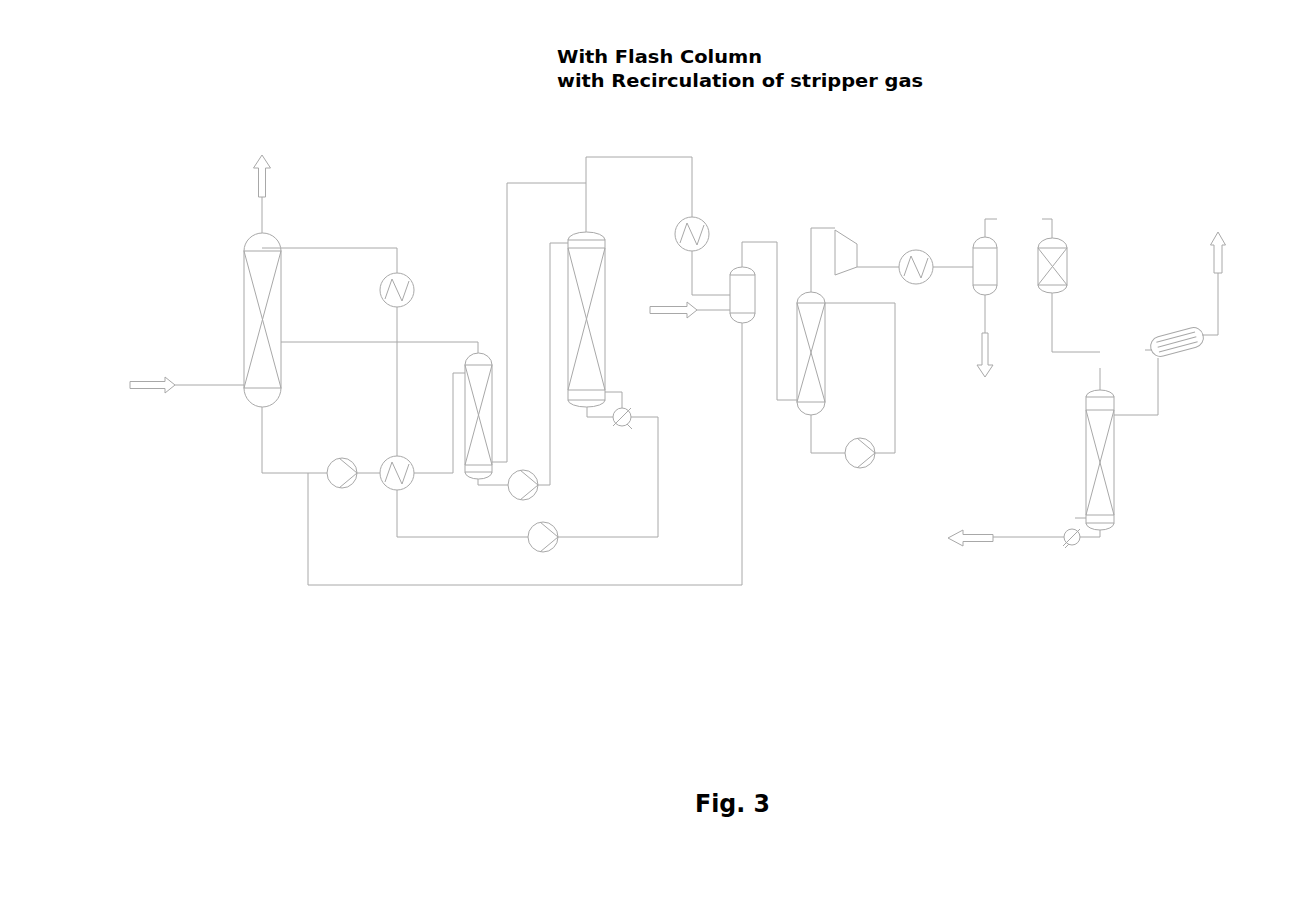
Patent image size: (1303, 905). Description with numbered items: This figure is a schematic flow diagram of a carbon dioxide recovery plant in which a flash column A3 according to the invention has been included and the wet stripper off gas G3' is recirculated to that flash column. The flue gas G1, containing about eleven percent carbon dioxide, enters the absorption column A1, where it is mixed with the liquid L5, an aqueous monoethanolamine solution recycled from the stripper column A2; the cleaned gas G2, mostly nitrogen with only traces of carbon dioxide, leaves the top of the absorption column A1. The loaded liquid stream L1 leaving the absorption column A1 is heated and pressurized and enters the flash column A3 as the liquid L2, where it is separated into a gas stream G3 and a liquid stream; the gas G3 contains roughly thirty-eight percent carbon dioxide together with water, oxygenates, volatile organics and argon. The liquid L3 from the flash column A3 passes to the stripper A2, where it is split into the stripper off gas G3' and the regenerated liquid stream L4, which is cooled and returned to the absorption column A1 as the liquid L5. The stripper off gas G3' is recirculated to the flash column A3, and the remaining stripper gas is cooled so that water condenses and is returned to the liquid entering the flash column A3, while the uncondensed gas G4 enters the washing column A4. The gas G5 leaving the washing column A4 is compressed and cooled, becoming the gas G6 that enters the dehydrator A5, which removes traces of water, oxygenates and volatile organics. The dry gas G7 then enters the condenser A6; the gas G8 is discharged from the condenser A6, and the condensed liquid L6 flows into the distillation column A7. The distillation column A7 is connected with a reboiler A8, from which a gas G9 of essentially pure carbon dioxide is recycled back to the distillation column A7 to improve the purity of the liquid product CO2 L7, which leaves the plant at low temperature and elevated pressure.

The absorption column A1 is at (287, 320).
The stripper column A2 is at (611, 330).
The flash column A3 is at (452, 413).
The washing column A4 is at (846, 380).
The dehydrator A5 is at (1076, 265).
The condenser A6 is at (1184, 363).
The distillation column A7 is at (1127, 460).
The reboiler A8 is at (1095, 558).
The feed gas G1 is at (187, 370).
The gas stream leaving the absorption column G2 is at (285, 195).
The gas leaving the flash column G3 is at (370, 352).
The stripper off gas G3' is at (611, 309).
The uncondensed gas entering the washing column G4 is at (723, 301).
The gas leaving the washing column G5 is at (901, 285).
The gas entering the dehydrator G6 is at (1018, 209).
The gas leaving the dehydrator G7 is at (1102, 341).
The gas discharged from the condenser G8 is at (1235, 286).
The gas recycled from the reboiler G9 is at (1057, 504).
The liquid stream leaving the absorption column L1 is at (299, 451).
The liquid entering the flash column L2 is at (422, 431).
The liquid entering the stripper L3 is at (540, 371).
The liquid stream leaving the stripper L4 is at (525, 458).
The recycled liquid entering the absorption column L5 is at (501, 474).
The liquid leaving the condenser L6 is at (1161, 401).
The liquid product CO2 L7 is at (1006, 557).